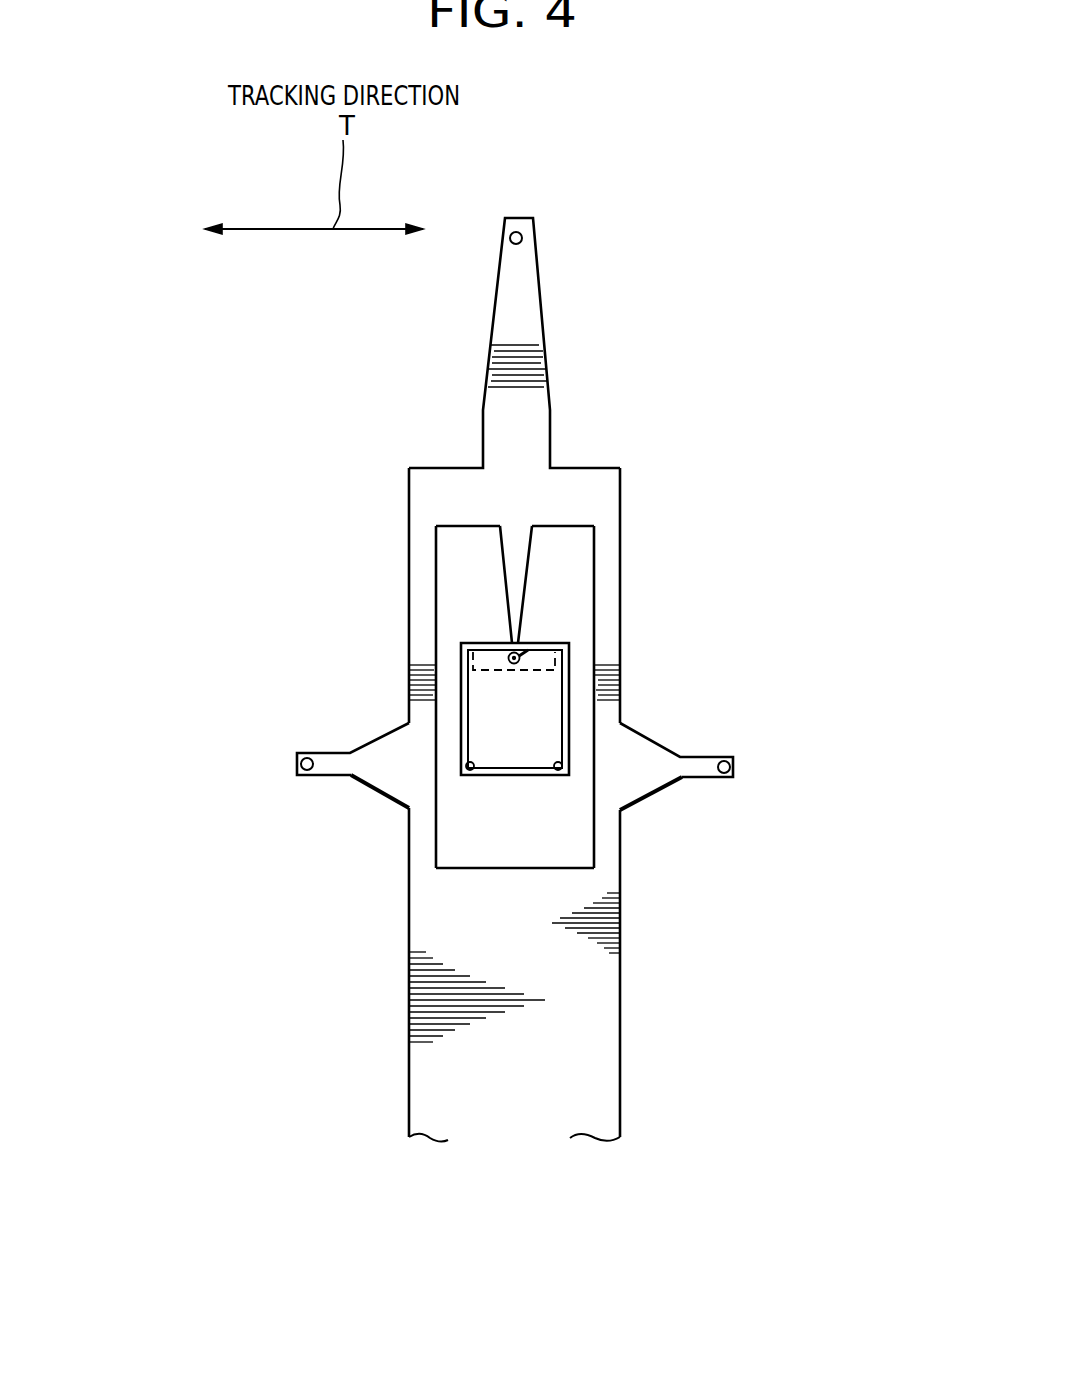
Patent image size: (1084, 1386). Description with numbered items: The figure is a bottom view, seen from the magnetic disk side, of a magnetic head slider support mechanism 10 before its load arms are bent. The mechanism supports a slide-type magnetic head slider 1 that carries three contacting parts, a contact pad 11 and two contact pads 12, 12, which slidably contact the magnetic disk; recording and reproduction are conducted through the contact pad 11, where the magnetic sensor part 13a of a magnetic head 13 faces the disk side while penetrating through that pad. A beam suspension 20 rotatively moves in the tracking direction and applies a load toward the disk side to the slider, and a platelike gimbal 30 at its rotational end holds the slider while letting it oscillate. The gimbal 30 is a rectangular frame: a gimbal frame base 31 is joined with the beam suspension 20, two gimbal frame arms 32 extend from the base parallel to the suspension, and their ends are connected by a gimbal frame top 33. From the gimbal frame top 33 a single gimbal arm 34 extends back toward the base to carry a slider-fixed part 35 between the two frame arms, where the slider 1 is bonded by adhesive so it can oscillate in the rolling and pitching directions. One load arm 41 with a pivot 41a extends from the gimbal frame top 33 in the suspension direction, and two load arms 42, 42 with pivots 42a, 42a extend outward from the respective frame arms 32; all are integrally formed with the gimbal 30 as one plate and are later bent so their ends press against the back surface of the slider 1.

The slide-type magnetic head slider 1 is at (532, 698).
The magnetic head slider support mechanism 10 is at (772, 1208).
The contact pad 11 is at (528, 650).
The contact pad 12 is at (470, 770).
The magnetic head 13 is at (560, 662).
The magnetic sensor part 13a is at (518, 652).
The beam suspension 20 is at (585, 1050).
The gimbal 30 is at (212, 908).
The gimbal frame base 31 is at (340, 922).
The gimbal frame arm 32 is at (425, 615).
The gimbal frame top 33 is at (388, 517).
The gimbal arm 34 is at (512, 568).
The slider-fixed part 35 is at (463, 667).
The load arm 41 is at (524, 300).
The pivot 41a is at (522, 236).
The load arm 42 is at (377, 772).
The pivot 42a is at (312, 753).